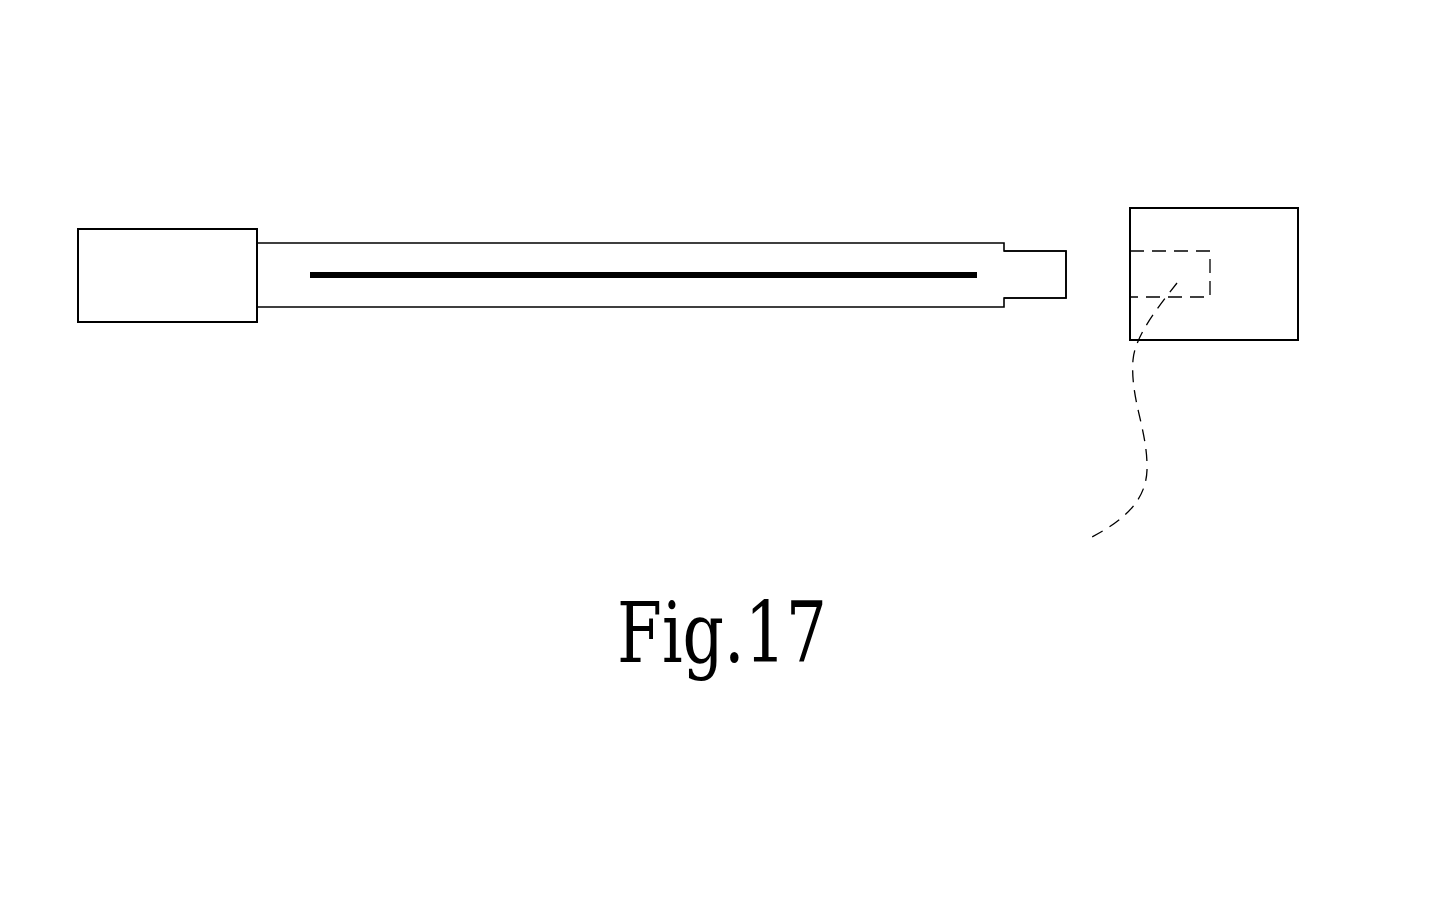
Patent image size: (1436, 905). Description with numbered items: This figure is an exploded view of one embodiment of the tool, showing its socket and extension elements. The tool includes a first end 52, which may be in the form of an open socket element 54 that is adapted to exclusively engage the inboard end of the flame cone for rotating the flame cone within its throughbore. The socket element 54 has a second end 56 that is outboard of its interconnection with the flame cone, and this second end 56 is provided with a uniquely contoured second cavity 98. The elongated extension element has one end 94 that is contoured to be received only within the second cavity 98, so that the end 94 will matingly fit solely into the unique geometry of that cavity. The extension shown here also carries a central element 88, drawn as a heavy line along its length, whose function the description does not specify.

The first end 52 is at (706, 243).
The optical fiber 88 is at (770, 276).
The end of the extension element 94 is at (1020, 299).
The socket element 54 is at (1260, 340).
The second end of the socket 56 is at (1299, 226).
The second cavity 98 is at (1120, 425).